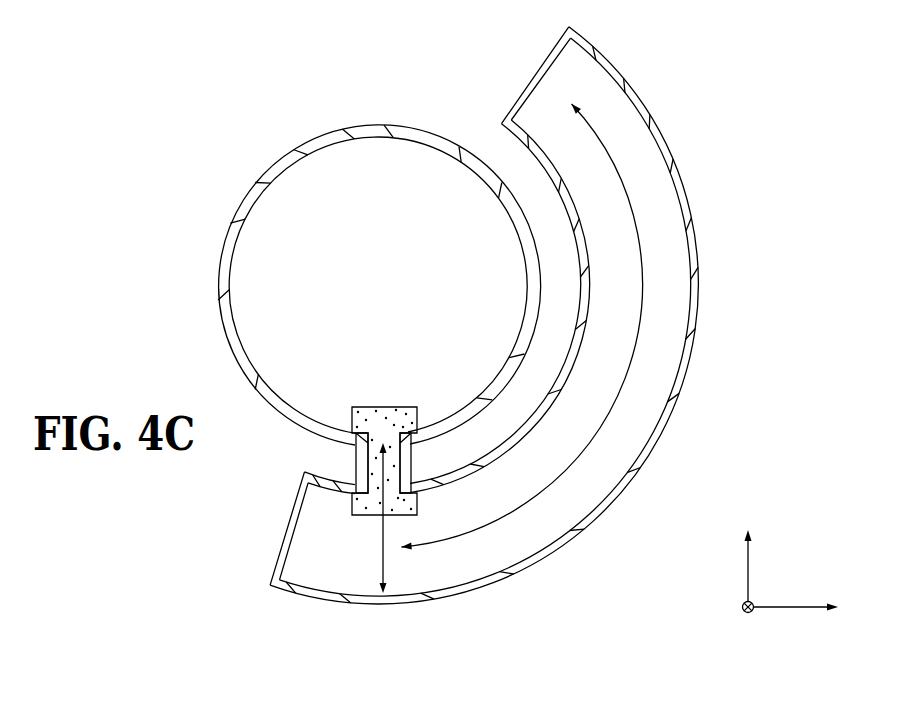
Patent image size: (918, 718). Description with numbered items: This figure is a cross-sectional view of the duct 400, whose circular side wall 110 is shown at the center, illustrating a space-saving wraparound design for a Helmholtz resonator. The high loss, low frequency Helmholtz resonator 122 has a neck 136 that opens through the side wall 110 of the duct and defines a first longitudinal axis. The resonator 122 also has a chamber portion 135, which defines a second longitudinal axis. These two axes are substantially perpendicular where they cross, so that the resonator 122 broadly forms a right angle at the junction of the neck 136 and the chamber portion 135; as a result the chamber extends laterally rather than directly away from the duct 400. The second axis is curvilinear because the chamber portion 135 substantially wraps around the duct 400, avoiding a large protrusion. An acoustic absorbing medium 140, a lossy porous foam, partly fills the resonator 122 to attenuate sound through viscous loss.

The duct 400 is at (220, 138).
The side wall 110 is at (447, 133).
The neck 136 is at (355, 466).
The acoustic absorbing medium 140 is at (378, 425).
The high loss, low frequency Helmholtz resonator 122 is at (723, 388).
The chamber portion 135 is at (710, 231).